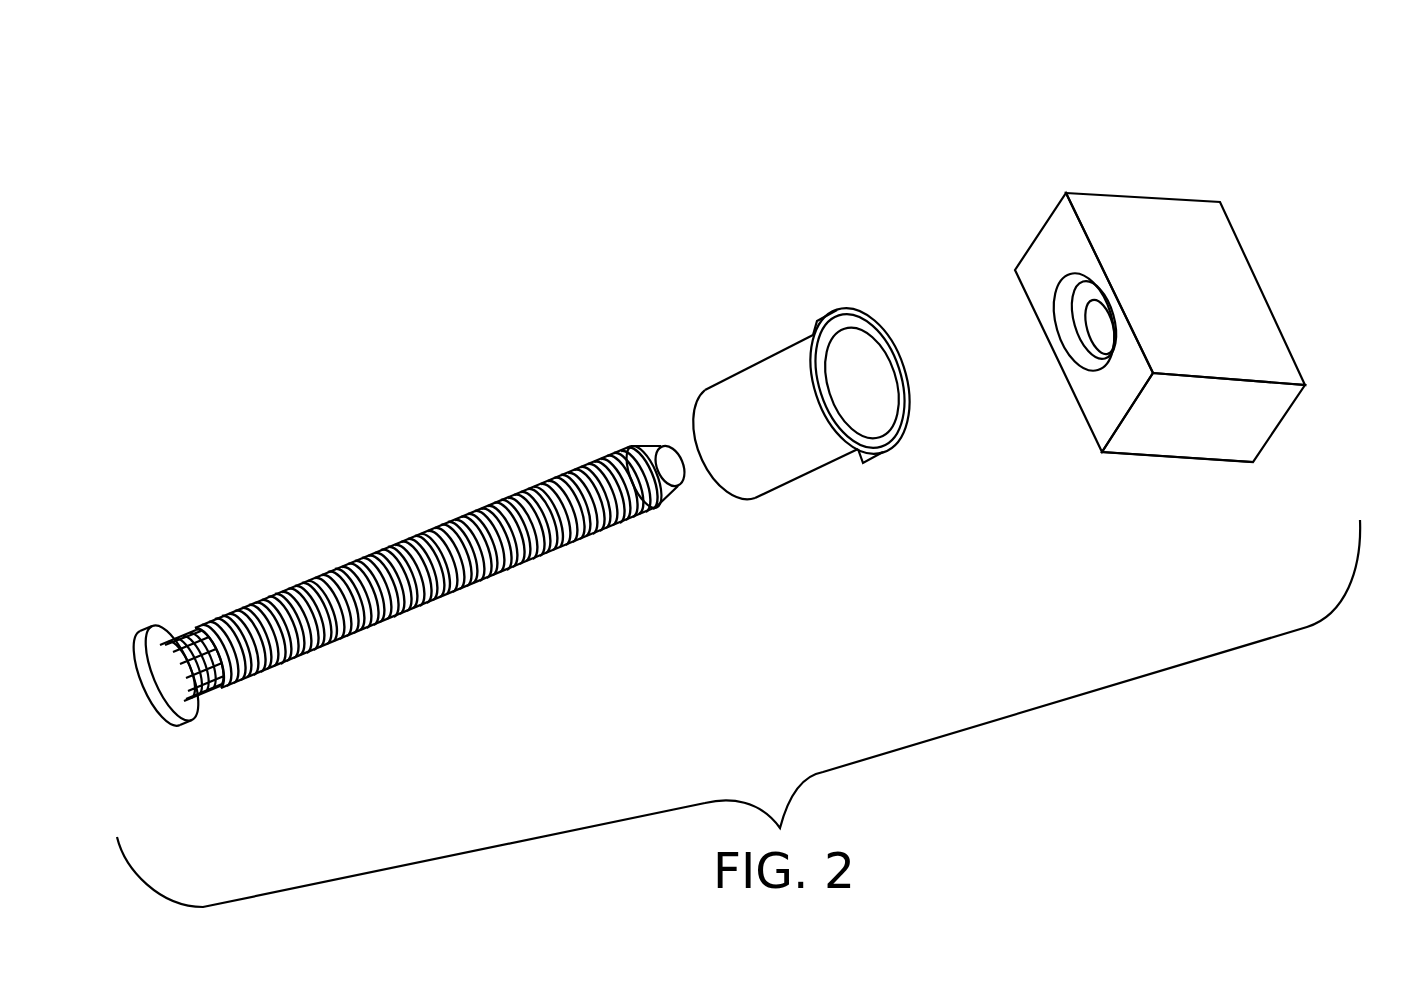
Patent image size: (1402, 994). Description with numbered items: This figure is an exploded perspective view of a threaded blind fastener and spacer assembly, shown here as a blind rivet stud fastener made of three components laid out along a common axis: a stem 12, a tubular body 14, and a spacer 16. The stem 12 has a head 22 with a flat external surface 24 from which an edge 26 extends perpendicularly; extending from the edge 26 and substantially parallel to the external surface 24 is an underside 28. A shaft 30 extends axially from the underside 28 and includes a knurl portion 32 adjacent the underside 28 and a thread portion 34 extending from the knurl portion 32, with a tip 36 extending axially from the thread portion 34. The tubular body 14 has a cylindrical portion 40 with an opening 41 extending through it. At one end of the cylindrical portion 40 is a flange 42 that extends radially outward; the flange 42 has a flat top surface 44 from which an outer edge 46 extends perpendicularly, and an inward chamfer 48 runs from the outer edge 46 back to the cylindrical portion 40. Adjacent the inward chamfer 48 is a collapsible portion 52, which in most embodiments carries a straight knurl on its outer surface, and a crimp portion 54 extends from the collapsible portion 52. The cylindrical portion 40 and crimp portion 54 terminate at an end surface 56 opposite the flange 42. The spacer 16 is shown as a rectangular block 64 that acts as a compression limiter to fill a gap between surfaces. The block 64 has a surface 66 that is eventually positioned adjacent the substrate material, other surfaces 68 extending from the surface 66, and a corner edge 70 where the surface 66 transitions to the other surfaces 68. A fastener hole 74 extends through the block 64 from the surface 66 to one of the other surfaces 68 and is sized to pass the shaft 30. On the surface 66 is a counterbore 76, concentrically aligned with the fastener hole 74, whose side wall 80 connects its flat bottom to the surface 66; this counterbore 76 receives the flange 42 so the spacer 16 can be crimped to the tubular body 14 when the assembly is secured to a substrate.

The stem 12 is at (355, 447).
The tubular body 14 is at (690, 338).
The spacer 16 is at (1220, 137).
The head 22 is at (194, 738).
The external surface 24 is at (145, 688).
The edge 26 is at (157, 633).
The underside 28 is at (196, 705).
The shaft 30 is at (442, 655).
The knurl portion 32 is at (198, 622).
The thread portion 34 is at (383, 547).
The tip 36 is at (682, 490).
The cylindrical portion 40 is at (792, 510).
The opening 41 is at (895, 397).
The flange 42 is at (826, 277).
The top surface 44 is at (868, 327).
The outer edge 46 is at (900, 440).
The inward chamfer 48 is at (812, 333).
The collapsible portion 52 is at (838, 467).
The crimp portion 54 is at (762, 358).
The end surface 56 is at (705, 392).
The block 64 is at (1152, 464).
The surface 66 is at (1047, 258).
The other surfaces 68 is at (1212, 287).
The corner edge 70 is at (1067, 193).
The fastener hole 74 is at (1047, 323).
The counterbore 76 is at (1077, 377).
The side wall 80 is at (1068, 293).